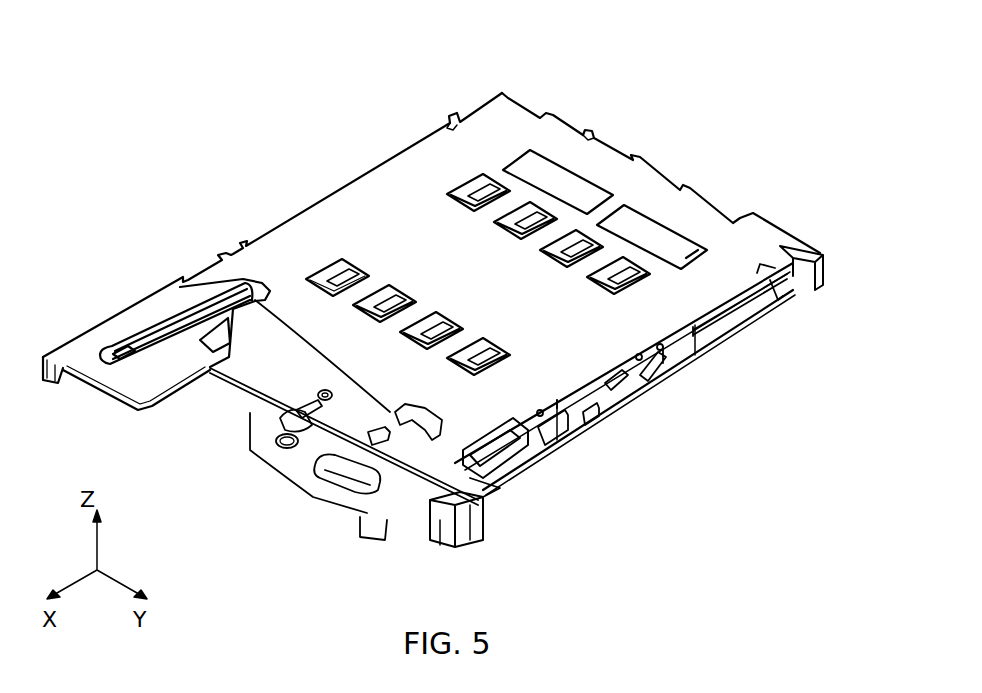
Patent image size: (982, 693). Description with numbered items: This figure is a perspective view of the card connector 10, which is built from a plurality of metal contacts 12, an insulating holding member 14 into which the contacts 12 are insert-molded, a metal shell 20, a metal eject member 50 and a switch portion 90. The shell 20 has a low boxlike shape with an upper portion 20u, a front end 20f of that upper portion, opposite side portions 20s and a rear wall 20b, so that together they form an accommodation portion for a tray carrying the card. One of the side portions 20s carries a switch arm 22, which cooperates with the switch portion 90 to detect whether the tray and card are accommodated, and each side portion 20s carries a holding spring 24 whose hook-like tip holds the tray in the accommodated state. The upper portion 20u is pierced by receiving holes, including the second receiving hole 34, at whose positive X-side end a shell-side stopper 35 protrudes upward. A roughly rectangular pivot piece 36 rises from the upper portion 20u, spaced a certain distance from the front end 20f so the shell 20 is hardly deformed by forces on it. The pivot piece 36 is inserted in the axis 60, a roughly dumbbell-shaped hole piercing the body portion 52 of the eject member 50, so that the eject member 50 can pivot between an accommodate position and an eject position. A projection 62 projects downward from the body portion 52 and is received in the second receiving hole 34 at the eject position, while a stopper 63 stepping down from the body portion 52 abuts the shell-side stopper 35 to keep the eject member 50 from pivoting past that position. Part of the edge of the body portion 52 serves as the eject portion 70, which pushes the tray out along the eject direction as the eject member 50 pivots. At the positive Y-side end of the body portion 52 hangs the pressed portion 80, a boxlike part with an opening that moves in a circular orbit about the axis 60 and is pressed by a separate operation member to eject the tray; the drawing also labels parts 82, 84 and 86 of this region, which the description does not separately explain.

The connector 10 is at (690, 170).
The shell 20 is at (394, 150).
The upper portion 20u is at (457, 140).
The rear wall 20b is at (587, 136).
The front end 20f is at (93, 383).
The side portions 20s is at (687, 360).
The contacts 12 is at (345, 272).
The holding member 14 is at (321, 278).
The switch arm 22 is at (740, 327).
The holding spring 24 is at (503, 452).
The eject member 50 is at (185, 272).
The body portion 52 is at (258, 330).
The eject portion 70 is at (210, 373).
The projection 62 is at (318, 397).
The stopper 63 is at (290, 420).
The shell-side stopper 35 is at (280, 450).
The second receiving hole 34 is at (310, 420).
The pivot piece 36 is at (367, 437).
The axis 60 is at (382, 449).
The pressed portion 80 is at (538, 522).
The frame piece 82 is at (480, 493).
The frame block 84 is at (510, 527).
The frame block inner 86 is at (480, 530).
The switch portion 90 is at (807, 282).